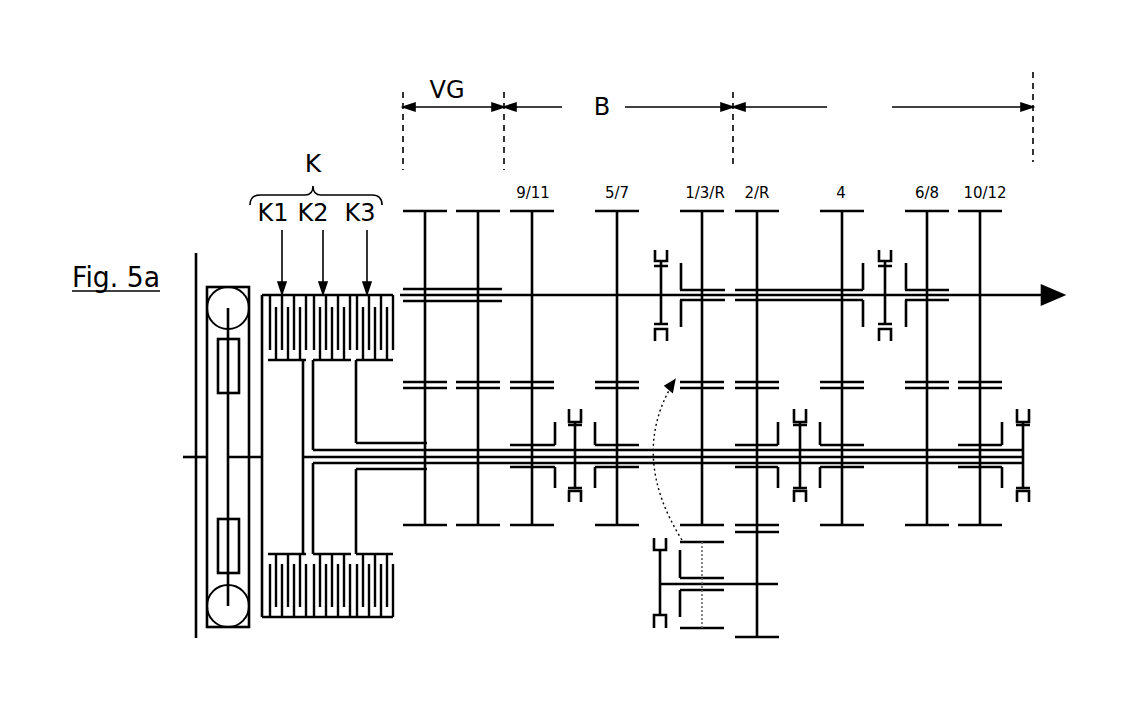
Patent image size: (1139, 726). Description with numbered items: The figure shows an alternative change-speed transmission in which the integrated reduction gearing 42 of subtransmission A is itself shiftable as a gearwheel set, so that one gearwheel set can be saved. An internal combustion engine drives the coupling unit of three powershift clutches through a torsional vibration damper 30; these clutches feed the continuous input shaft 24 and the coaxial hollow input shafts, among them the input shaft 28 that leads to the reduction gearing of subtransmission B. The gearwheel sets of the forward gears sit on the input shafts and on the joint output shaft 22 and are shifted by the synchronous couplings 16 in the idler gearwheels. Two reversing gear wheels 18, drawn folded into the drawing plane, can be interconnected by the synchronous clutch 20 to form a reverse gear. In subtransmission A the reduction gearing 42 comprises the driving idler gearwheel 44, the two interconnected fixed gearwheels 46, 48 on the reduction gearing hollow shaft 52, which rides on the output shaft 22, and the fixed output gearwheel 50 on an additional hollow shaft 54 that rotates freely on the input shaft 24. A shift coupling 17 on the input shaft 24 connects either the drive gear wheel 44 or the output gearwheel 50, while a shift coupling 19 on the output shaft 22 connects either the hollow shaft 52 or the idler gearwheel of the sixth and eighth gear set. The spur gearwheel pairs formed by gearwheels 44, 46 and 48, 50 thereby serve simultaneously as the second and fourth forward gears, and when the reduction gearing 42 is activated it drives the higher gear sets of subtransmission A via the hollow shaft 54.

The synchronous coupling 16 is at (661, 245).
The shift coupling 17 is at (757, 500).
The reversing gear wheel 18 is at (708, 630).
The shift coupling 19 is at (906, 343).
The synchronous clutch 20 is at (645, 630).
The output shaft 22 is at (563, 293).
The input shaft 24 is at (788, 441).
The input shaft 28 is at (396, 443).
The torsional vibration damper 30 is at (208, 632).
The reduction gearing 42 is at (805, 248).
The reduction gearing drive gear wheel 44 is at (803, 512).
The fixed gearwheel 46 is at (757, 247).
The fixed gearwheel 48 is at (851, 211).
The reduction gearing output gearwheel 50 is at (843, 500).
The reduction gearing hollow shaft 52 is at (803, 302).
The hollow shaft 54 is at (893, 450).